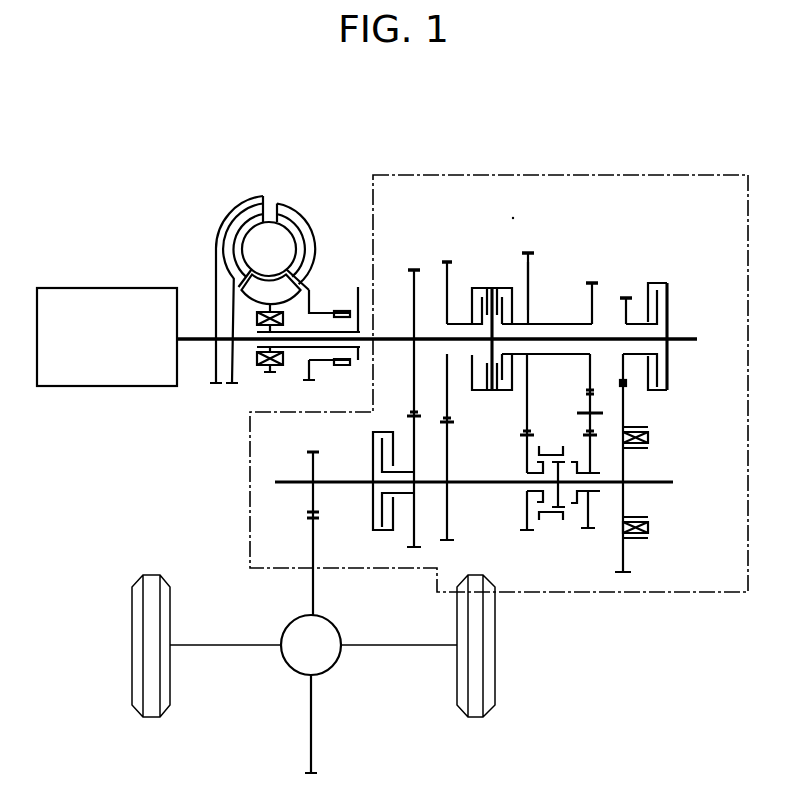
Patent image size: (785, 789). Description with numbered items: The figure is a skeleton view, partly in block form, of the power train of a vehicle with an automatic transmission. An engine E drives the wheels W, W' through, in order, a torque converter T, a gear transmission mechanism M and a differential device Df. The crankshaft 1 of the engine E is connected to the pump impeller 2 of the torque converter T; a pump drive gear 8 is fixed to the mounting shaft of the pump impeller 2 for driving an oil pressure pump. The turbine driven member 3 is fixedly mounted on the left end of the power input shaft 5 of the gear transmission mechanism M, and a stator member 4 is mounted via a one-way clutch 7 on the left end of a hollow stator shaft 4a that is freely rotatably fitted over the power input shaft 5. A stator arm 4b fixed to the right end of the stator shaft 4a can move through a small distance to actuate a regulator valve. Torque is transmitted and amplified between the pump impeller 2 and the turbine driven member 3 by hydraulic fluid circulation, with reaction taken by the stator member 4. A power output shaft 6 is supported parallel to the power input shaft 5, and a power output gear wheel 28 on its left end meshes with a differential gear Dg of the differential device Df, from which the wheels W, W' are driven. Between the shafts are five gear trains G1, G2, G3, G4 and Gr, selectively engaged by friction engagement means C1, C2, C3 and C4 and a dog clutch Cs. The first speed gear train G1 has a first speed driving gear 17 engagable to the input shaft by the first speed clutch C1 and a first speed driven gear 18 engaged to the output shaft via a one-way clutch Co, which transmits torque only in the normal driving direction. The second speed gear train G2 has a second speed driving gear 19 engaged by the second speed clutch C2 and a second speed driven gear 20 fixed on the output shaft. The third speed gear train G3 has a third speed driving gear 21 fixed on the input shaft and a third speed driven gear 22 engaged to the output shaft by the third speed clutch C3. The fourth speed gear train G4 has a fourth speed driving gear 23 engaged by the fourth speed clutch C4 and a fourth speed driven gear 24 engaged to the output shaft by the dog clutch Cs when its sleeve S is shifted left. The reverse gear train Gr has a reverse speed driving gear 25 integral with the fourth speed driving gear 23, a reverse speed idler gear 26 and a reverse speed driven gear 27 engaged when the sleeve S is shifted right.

The engine E is at (116, 357).
The crankshaft 1 is at (192, 341).
The torque converter T is at (278, 261).
The pump impeller 2 is at (313, 241).
The turbine driven member 3 is at (233, 217).
The stator member 4 is at (300, 290).
The stator shaft 4a is at (358, 362).
The stator arm 4b is at (358, 288).
The power input shaft 5 is at (297, 348).
The one-way clutch 7 is at (257, 318).
The pump drive gear 8 is at (342, 311).
The gear transmission mechanism M is at (562, 174).
The first speed gear train G1 is at (625, 291).
The second speed gear train G2 is at (447, 261).
The third speed gear train G3 is at (414, 269).
The fourth speed gear train G4 is at (528, 252).
The reverse speed gear train Gr is at (592, 282).
The first speed clutch C1 is at (667, 282).
The second speed clutch C2 is at (481, 288).
The third speed clutch C3 is at (373, 452).
The fourth speed clutch C4 is at (506, 288).
The first speed driving gear 17 is at (630, 324).
The first speed driven gear 18 is at (625, 403).
The second speed driving gear 19 is at (447, 312).
The second speed driven gear 20 is at (447, 441).
The third speed driving gear 21 is at (414, 303).
The third speed driven gear 22 is at (409, 530).
The fourth speed driving gear 23 is at (532, 272).
The fourth speed driven gear 24 is at (526, 459).
The reverse speed driving gear 25 is at (590, 303).
The reverse speed idler gear 26 is at (588, 401).
The reverse speed driven gear 27 is at (591, 457).
The sleeve S is at (553, 521).
The dog clutch Cs is at (527, 537).
The one-way clutch Co is at (649, 528).
The power output shaft 6 is at (292, 484).
The power output gear wheel 28 is at (311, 463).
The differential gear Dg is at (315, 595).
The differential device Df is at (335, 663).
The wheel W is at (206, 666).
The wheel W' is at (431, 666).